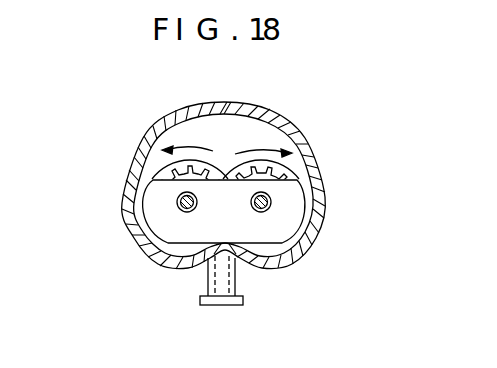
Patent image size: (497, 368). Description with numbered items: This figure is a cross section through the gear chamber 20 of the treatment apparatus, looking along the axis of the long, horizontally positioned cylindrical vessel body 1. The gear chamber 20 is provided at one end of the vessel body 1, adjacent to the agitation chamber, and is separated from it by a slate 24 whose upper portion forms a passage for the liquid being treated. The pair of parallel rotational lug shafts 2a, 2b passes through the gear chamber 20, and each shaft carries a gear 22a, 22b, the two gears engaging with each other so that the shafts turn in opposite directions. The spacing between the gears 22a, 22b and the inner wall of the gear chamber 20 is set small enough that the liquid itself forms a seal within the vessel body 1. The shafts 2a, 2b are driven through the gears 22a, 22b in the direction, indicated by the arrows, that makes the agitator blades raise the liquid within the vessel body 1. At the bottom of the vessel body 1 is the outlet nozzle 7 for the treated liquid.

The vessel body 1 is at (196, 103).
The gear chamber 20 is at (188, 168).
The gear 22a is at (282, 170).
The gear 22b is at (163, 176).
The slate 24 is at (160, 203).
The rotational lug shaft 2a is at (266, 203).
The rotational lug shaft 2b is at (180, 208).
The outlet nozzle 7 is at (221, 306).